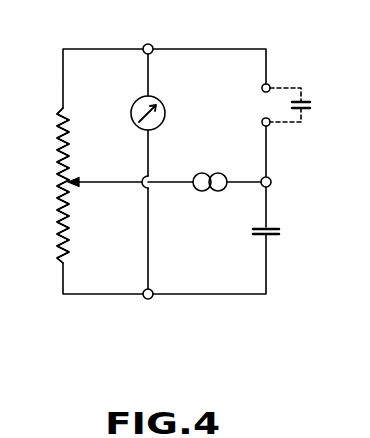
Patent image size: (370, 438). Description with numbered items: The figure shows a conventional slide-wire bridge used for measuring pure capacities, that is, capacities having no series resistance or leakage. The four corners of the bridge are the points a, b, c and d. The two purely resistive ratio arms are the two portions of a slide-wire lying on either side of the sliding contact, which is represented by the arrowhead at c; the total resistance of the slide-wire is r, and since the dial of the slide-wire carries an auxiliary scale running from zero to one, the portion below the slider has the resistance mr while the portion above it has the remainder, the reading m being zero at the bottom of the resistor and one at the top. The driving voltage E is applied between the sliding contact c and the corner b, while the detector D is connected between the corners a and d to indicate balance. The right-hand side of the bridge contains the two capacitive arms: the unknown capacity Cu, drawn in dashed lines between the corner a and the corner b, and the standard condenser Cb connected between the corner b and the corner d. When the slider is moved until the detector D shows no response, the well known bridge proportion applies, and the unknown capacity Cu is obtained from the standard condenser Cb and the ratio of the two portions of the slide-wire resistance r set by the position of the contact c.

The bridge corner a is at (148, 41).
The bridge corner b is at (272, 183).
The sliding contact c is at (130, 177).
The bridge corner d is at (148, 303).
The detector D is at (155, 171).
The driving voltage E is at (227, 194).
The unknown capacity Cu is at (295, 105).
The standard condenser Cb is at (277, 238).
The total resistance of the slide-wire r is at (56, 185).
The lower portion of the slide-wire resistance mr is at (77, 221).